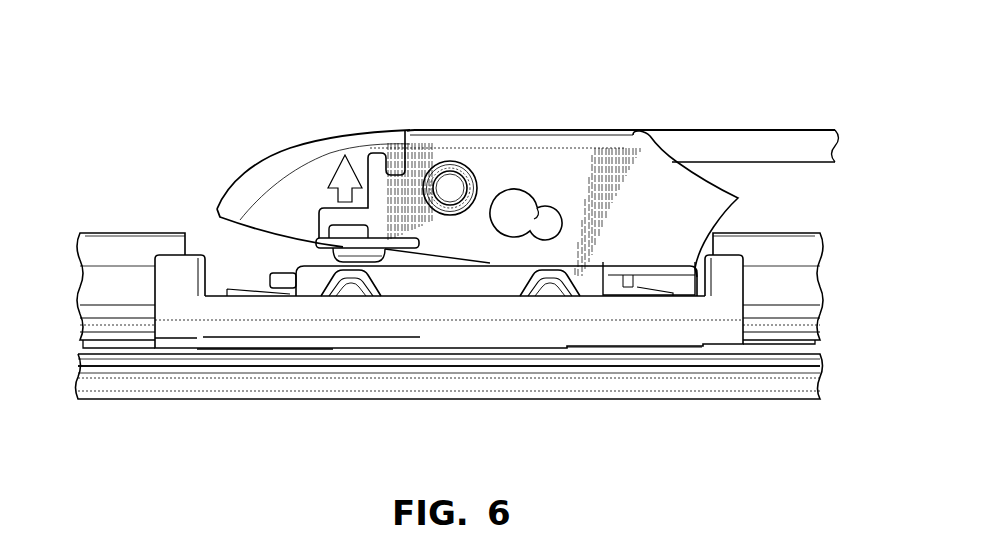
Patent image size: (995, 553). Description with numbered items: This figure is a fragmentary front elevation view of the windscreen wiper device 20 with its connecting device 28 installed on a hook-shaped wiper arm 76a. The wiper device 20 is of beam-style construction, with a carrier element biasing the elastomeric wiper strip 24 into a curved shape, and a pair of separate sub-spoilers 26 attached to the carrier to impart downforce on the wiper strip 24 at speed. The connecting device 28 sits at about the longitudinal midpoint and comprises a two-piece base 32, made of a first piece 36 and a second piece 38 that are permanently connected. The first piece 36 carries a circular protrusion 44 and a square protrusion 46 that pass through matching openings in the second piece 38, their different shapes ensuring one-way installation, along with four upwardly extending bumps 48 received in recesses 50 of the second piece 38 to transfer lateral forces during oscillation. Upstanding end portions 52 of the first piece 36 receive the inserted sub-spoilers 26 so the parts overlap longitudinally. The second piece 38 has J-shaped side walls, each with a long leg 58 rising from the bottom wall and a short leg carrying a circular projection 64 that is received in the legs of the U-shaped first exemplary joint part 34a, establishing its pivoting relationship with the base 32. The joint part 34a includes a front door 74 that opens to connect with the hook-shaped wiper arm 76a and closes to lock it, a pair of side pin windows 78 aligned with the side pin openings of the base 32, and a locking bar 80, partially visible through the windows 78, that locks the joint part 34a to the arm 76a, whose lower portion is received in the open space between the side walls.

The windscreen wiper device 20 is at (759, 76).
The wiper strip 24 is at (133, 382).
The sub-spoilers 26 is at (115, 250).
The connecting device 28 is at (264, 137).
The base 32 is at (305, 363).
The first exemplary joint part 34a is at (525, 160).
The first piece 36 is at (497, 327).
The second piece 38 is at (430, 288).
The protrusion 44 is at (279, 270).
The protrusion 46 is at (632, 282).
The bumps 48 is at (355, 286).
The recesses 50 is at (357, 273).
The end portions 52 is at (165, 278).
The long leg 58 is at (316, 409).
The circular projections 64 is at (440, 161).
The front door 74 is at (313, 168).
The hook-shaped wiper arm 76a is at (715, 137).
The side pin windows 78 is at (526, 214).
The locking bar 80 is at (540, 217).